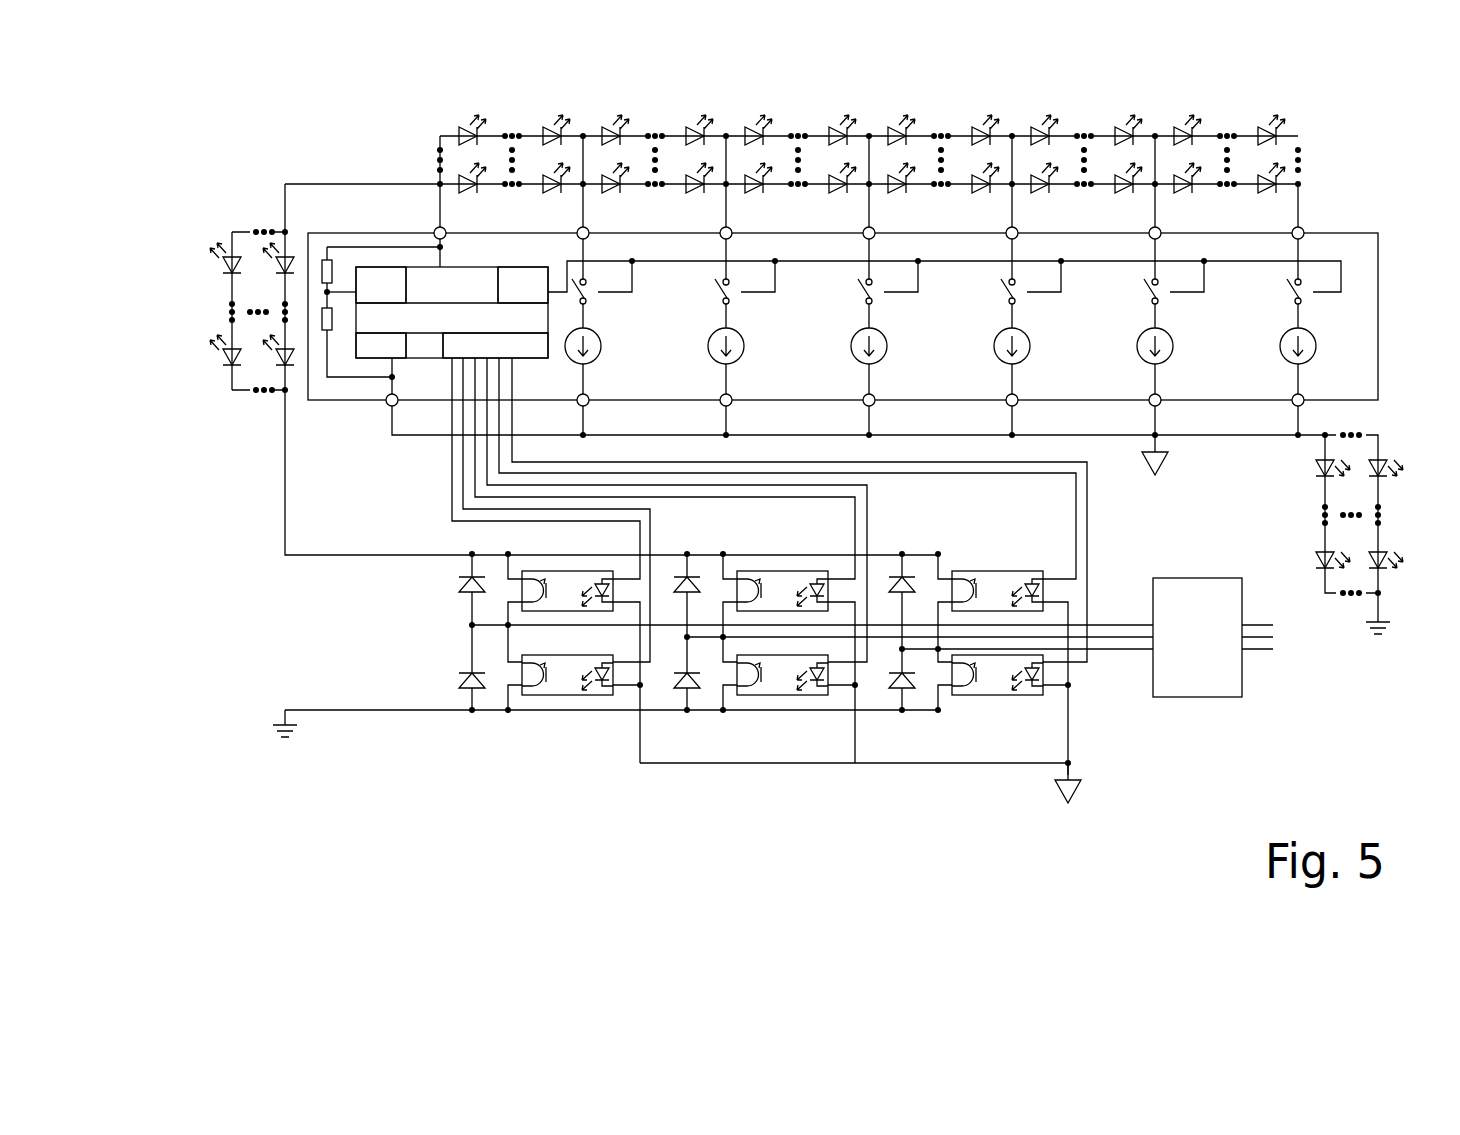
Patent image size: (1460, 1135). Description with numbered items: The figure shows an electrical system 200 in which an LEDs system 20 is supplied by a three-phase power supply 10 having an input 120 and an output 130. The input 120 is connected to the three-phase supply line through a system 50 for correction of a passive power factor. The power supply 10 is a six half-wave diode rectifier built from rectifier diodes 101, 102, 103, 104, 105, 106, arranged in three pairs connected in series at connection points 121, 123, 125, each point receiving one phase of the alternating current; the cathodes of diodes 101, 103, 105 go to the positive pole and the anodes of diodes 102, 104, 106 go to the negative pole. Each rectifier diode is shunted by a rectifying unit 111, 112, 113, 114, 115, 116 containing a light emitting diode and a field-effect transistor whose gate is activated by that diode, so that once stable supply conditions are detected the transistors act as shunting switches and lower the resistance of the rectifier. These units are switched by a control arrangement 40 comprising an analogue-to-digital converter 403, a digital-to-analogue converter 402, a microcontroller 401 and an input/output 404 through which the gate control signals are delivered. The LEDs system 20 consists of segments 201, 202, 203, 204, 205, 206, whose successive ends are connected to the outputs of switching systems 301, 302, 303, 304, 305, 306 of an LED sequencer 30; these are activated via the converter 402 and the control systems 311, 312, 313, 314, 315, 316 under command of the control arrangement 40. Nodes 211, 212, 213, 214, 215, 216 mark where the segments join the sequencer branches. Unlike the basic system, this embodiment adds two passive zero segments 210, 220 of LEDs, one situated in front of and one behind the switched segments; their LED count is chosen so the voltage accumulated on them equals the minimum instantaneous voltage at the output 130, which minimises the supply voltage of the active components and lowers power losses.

The three-phase power supply 10 is at (1032, 790).
The LEDs system 20 is at (430, 128).
The LED sequencer 30 is at (1317, 193).
The control arrangement 40 is at (382, 345).
The system for correction of a passive power factor 50 is at (1163, 682).
The rectifier diode 101 is at (465, 592).
The rectifier diode 102 is at (468, 690).
The rectifier diode 103 is at (682, 592).
The rectifier diode 104 is at (684, 690).
The rectifier diode 105 is at (897, 592).
The rectifier diode 106 is at (898, 690).
The rectifying unit 111 is at (566, 588).
The rectifying unit 112 is at (580, 680).
The rectifying unit 113 is at (780, 585).
The rectifying unit 114 is at (792, 683).
The rectifying unit 115 is at (997, 585).
The rectifying unit 116 is at (1008, 683).
The input 120 is at (1088, 662).
The connection point 121 is at (470, 626).
The connection point 123 is at (687, 638).
The connection point 125 is at (900, 650).
The output 130 is at (278, 667).
The electrical system 200 is at (308, 128).
The segment of the LEDs system 201 is at (498, 135).
The segment of the LEDs system 202 is at (655, 140).
The segment of the LEDs system 203 is at (797, 145).
The segment of the LEDs system 204 is at (930, 140).
The segment of the LEDs system 205 is at (1071, 140).
The segment of the LEDs system 206 is at (1213, 140).
The passive zero segment 210 is at (243, 240).
The passive zero segment 220 is at (1352, 610).
The tap node 211 is at (583, 135).
The tap node 212 is at (726, 135).
The tap node 213 is at (869, 135).
The tap node 214 is at (1012, 135).
The tap node 215 is at (1155, 135).
The tap node 216 is at (1300, 183).
The switching system 301 is at (585, 300).
The switching system 302 is at (728, 300).
The switching system 303 is at (871, 300).
The switching system 304 is at (1014, 300).
The switching system 305 is at (1157, 300).
The switching system 306 is at (1300, 298).
The control system 311 is at (590, 286).
The control system 312 is at (733, 286).
The control system 313 is at (876, 286).
The control system 314 is at (1019, 286).
The control system 315 is at (1162, 286).
The control system 316 is at (1313, 290).
The microcontroller 401 is at (357, 335).
The digital-to-analogue converter DAC 402 is at (497, 275).
The analogue-to-digital converter ADC 403 is at (385, 272).
The input/output 404 is at (442, 352).